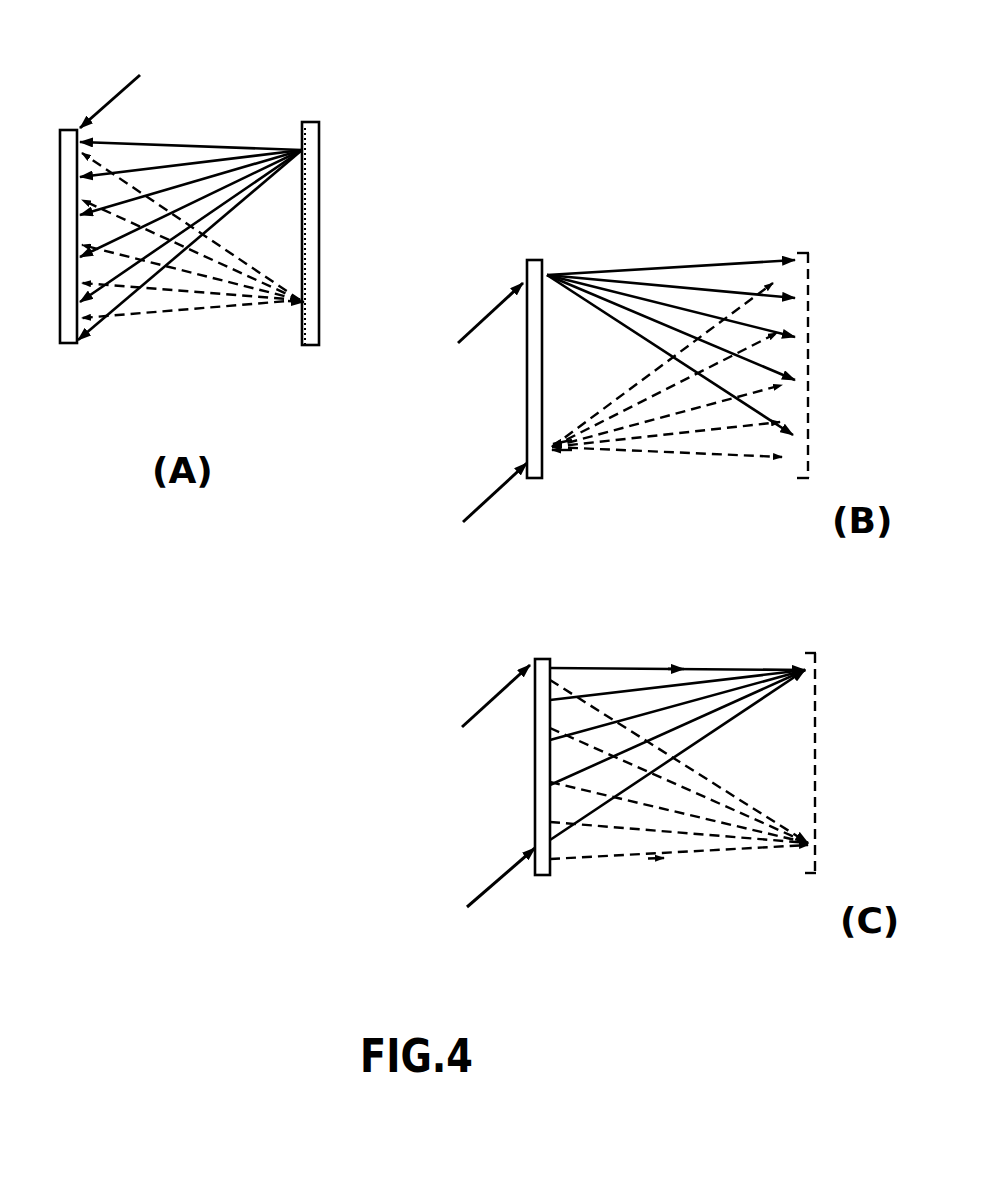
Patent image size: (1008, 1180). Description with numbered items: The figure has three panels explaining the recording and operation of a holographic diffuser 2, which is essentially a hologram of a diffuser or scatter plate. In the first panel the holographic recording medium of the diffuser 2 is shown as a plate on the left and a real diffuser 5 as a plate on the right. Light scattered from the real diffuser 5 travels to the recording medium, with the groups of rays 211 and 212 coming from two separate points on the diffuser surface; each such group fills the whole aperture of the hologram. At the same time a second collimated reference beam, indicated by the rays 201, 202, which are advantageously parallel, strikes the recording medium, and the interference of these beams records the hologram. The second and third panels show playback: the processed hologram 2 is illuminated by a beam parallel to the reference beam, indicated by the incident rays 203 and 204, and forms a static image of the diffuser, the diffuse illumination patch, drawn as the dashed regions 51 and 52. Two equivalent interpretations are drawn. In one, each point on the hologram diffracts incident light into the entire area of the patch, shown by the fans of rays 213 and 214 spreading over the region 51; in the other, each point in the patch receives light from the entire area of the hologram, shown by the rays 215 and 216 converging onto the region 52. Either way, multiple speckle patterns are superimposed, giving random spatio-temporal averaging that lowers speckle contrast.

In FIG. 4A, the holographic diffuser 2 is at (58, 213).
In FIG. 4B, the holographic diffuser 2 is at (524, 376).
In FIG. 4C, the holographic diffuser 2 is at (535, 775).
In FIG. 4A, the real diffuser 5 is at (326, 250).
In FIG. 4B, the reflecting surface 51 is at (812, 438).
In FIG. 4C, the reflecting surface 52 is at (817, 747).
In FIG. 4A, the reference beam ray 201 is at (139, 73).
In FIG. 4A, the reference beam ray 202 is at (97, 337).
In FIG. 4B, the incident light 203 is at (460, 343).
In FIG. 4C, the incident light 203 is at (475, 727).
In FIG. 4B, the incident light 204 is at (463, 522).
In FIG. 4C, the incident light 204 is at (490, 902).
In FIG. 4A, the group of rays from a diffuser point 211 is at (208, 150).
In FIG. 4A, the group of rays from a diffuser point 212 is at (193, 302).
In FIG. 4B, the light beam (solid) 213 is at (642, 277).
In FIG. 4B, the light beam (dashed) 214 is at (630, 440).
In FIG. 4C, the light beam (solid) 215 is at (643, 663).
In FIG. 4C, the light beam (dashed) 216 is at (703, 840).